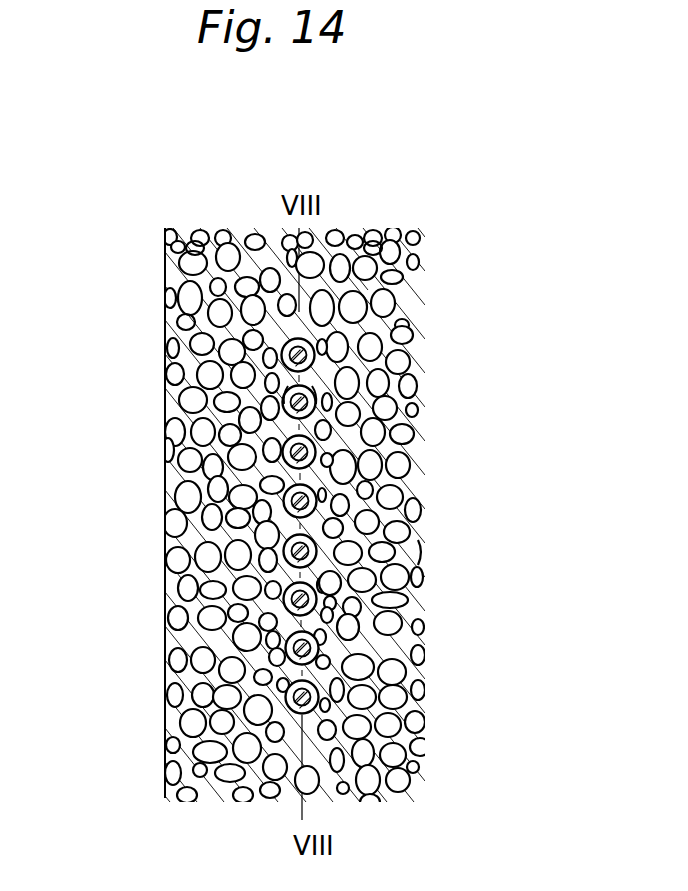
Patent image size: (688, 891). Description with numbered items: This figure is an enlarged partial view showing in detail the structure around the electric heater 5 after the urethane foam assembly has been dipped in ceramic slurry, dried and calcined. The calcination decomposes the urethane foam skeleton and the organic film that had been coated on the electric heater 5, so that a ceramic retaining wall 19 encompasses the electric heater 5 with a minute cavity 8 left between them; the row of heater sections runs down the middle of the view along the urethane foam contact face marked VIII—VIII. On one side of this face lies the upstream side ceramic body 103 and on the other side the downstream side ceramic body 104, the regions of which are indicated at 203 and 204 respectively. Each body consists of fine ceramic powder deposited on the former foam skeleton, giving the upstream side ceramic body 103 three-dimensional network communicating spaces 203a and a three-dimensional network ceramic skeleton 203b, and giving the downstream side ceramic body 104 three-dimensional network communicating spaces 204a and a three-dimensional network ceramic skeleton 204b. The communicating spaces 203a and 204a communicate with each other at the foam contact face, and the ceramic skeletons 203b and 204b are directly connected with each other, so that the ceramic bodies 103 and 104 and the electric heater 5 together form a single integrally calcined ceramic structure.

The electric heater 5 is at (293, 360).
The minute cavity 8 is at (284, 392).
The ceramic retaining wall 19 is at (182, 321).
The upstream side ceramic body 103 is at (138, 533).
The downstream side ceramic body 104 is at (437, 552).
The first particle layer 203 is at (237, 222).
The three-dimensional network communicating spaces 203a is at (203, 272).
The three-dimensional network ceramic skeleton 203b is at (193, 248).
The second particle layer 204 is at (358, 232).
The three-dimensional network communicating spaces 204a is at (365, 270).
The three-dimensional network ceramic skeleton 204b is at (373, 243).